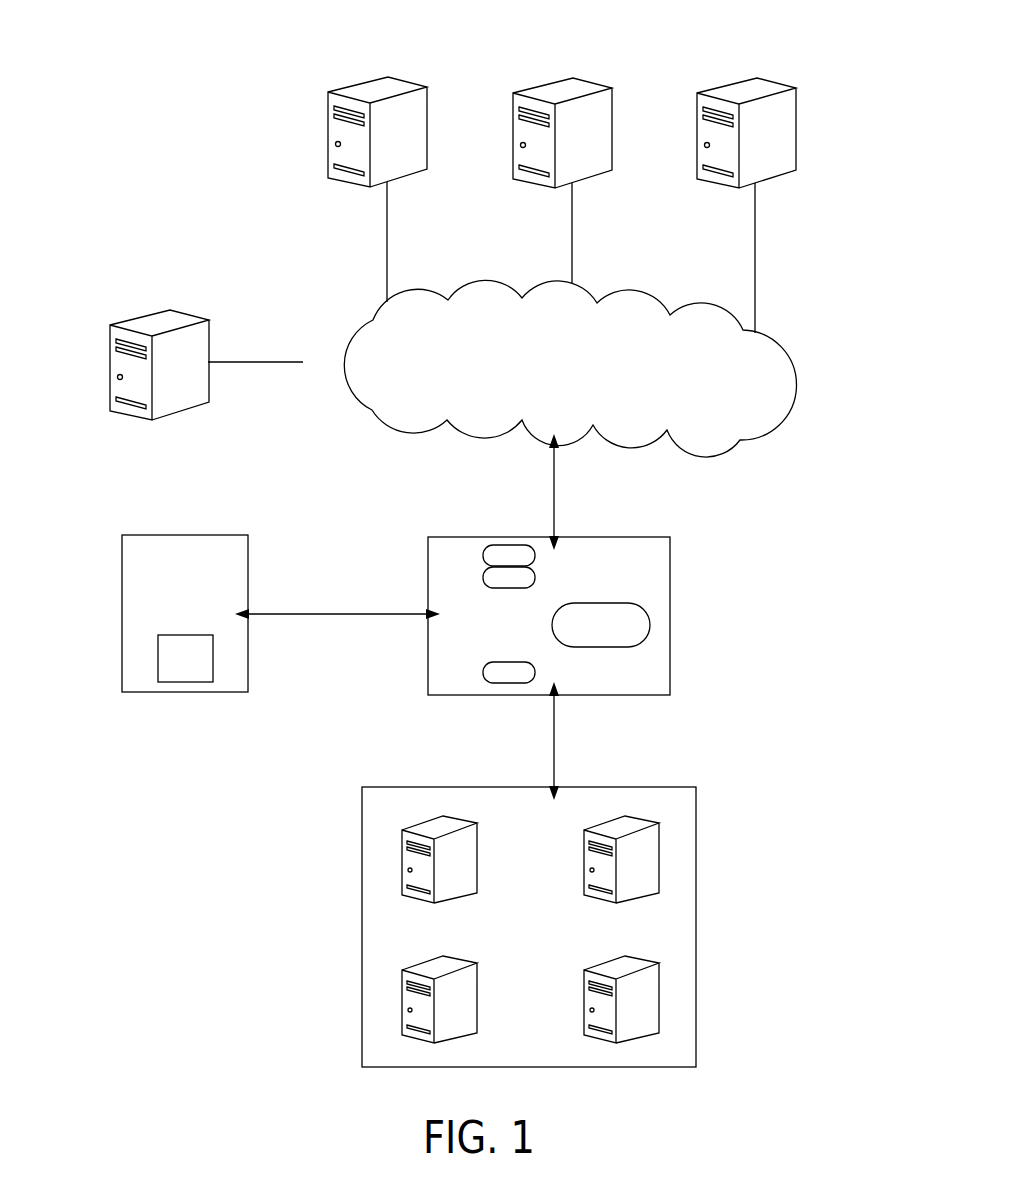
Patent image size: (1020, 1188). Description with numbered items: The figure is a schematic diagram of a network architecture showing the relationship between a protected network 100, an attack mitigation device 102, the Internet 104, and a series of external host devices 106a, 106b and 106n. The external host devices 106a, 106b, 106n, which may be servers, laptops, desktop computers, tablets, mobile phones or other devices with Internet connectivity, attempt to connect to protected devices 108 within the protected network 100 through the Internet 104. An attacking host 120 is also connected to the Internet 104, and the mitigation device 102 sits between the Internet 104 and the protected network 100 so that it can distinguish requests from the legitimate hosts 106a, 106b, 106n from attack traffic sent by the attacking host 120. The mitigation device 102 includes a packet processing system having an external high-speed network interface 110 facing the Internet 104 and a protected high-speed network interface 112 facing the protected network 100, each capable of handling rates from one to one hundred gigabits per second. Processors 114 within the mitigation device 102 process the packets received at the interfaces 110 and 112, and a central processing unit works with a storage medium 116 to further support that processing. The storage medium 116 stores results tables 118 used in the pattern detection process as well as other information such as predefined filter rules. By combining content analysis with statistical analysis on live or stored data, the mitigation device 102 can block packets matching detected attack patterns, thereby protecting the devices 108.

The protected network 100 is at (680, 778).
The attack mitigation device 102 is at (541, 610).
The Internet 104 is at (780, 332).
The external host device 106a is at (370, 90).
The external host device 106b is at (558, 91).
The external host device 106n is at (743, 91).
The protected devices 108 is at (402, 862).
The external high-speed network interface 110 is at (500, 544).
The protected high-speed network interface 112 is at (497, 684).
The processors 114 is at (482, 578).
The storage medium 116 is at (145, 627).
The results tables 118 is at (186, 683).
The attacking host 120 is at (150, 322).